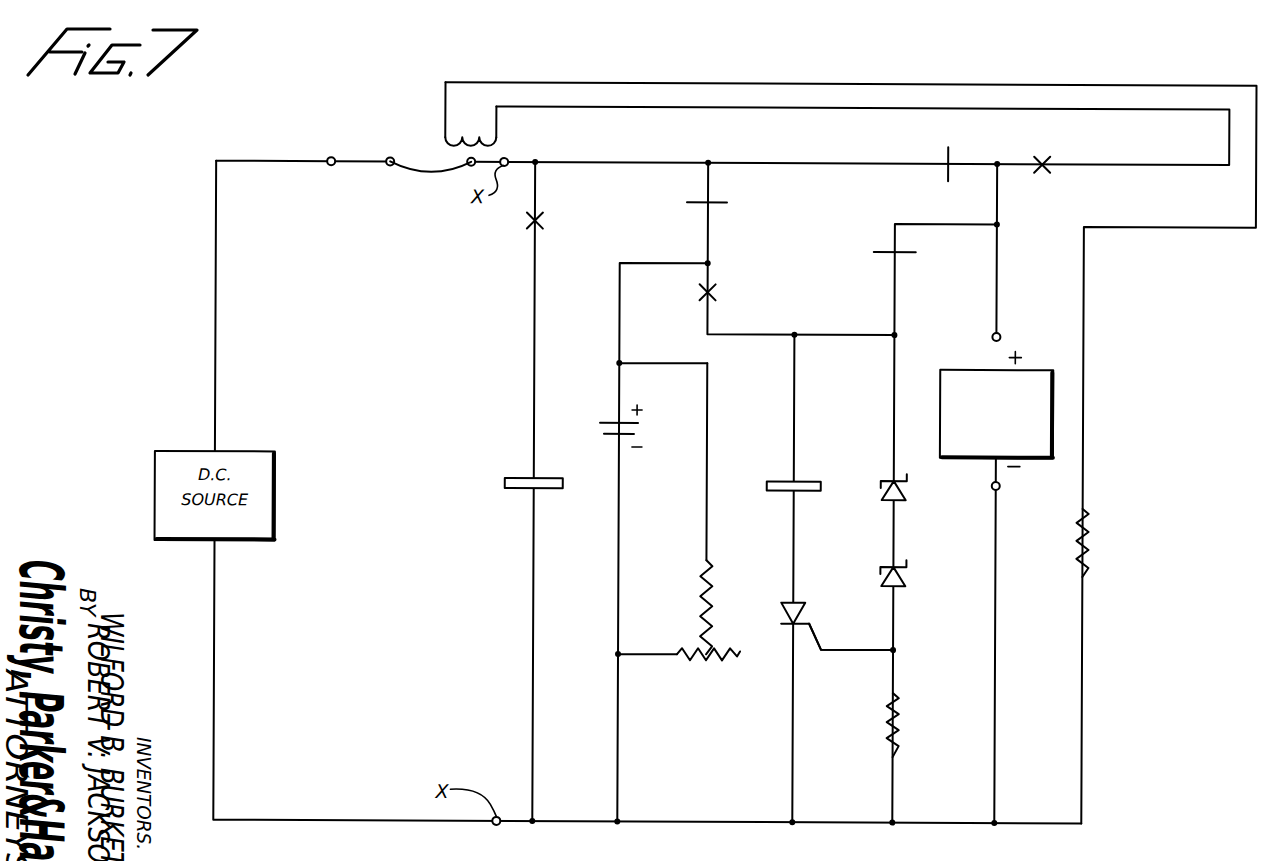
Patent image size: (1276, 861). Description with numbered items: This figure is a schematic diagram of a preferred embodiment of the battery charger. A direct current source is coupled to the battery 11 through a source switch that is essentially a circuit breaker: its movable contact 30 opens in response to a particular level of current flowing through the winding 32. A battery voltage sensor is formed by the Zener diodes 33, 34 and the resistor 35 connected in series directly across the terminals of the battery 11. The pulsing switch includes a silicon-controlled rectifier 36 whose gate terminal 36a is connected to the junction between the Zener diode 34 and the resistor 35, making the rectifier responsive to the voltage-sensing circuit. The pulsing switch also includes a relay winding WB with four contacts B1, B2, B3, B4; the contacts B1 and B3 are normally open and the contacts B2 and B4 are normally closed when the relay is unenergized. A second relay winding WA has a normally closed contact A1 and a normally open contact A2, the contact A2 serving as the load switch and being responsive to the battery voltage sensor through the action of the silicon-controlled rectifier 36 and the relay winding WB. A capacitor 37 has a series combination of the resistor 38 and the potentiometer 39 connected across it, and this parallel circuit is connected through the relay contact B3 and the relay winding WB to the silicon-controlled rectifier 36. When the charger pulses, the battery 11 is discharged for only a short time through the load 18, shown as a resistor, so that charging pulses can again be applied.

The battery 11 is at (971, 368).
The load 18 is at (1076, 546).
The movable contact 30 is at (424, 176).
The winding 32 is at (478, 128).
The Zener diode 33 is at (885, 478).
The Zener diode 34 is at (886, 564).
The resistor 35 is at (890, 733).
The silicon-controlled rectifier 36 is at (786, 601).
The gate terminal 36a is at (825, 651).
The capacitor 37 is at (605, 422).
The resistor 38 is at (704, 562).
The potentiometer 39 is at (720, 668).
The normally closed contact A1 is at (941, 179).
The normally open contact A2 is at (1036, 182).
The relay contact B1 is at (549, 224).
The relay contact B2 is at (721, 207).
The relay contact B3 is at (722, 296).
The relay contact B4 is at (908, 258).
The relay winding WA is at (513, 488).
The relay winding WB is at (781, 491).